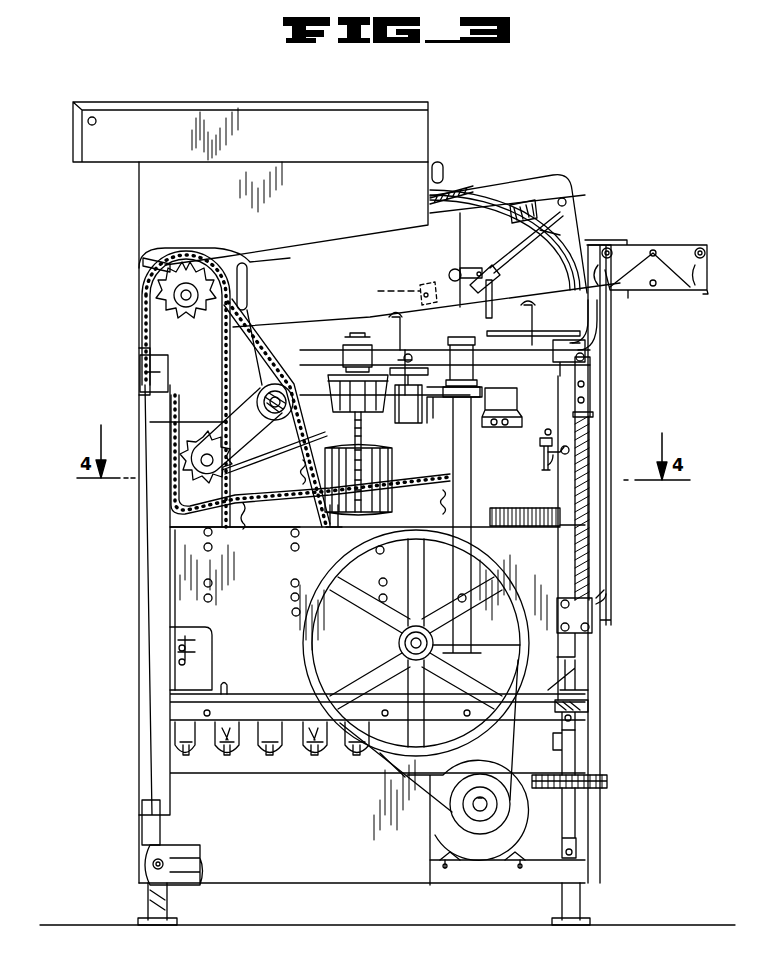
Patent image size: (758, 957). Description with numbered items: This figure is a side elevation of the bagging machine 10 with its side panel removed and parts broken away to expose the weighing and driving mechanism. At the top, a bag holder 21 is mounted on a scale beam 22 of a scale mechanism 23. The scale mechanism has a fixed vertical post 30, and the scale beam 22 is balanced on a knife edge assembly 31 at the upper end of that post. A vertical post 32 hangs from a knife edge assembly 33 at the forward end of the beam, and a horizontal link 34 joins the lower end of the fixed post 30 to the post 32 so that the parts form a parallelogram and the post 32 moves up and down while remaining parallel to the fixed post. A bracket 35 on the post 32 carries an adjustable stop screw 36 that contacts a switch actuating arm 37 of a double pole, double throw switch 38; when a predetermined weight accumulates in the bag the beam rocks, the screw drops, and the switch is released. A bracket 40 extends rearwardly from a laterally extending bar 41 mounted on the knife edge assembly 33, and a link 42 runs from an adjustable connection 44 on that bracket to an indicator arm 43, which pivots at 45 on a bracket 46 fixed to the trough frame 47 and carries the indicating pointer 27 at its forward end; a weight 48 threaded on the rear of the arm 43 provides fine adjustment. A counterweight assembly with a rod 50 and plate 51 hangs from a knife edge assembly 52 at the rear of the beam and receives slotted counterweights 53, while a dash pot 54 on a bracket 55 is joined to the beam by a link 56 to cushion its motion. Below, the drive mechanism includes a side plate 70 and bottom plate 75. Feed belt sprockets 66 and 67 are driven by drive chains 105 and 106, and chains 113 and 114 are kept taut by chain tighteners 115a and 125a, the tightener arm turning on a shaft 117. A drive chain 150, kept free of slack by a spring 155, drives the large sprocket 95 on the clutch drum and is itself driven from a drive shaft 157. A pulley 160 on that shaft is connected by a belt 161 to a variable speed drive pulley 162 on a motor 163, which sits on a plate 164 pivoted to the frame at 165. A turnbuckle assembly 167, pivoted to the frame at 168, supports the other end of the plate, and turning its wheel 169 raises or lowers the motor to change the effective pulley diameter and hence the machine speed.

The machine 10 is at (107, 595).
The bag holder 21 is at (698, 234).
The scale beam 22 is at (500, 361).
The scale mechanism 23 is at (572, 414).
The indicating pointer 27 is at (485, 315).
The fixed vertical post 30 is at (463, 472).
The knife edge assembly 31 is at (476, 370).
The vertical post 32 is at (568, 550).
The knife edge assembly 33 is at (584, 356).
The horizontal link 34 is at (540, 650).
The bracket 35 is at (563, 457).
The adjustable stop screw 36 is at (548, 462).
The switch actuating arm 37 is at (545, 436).
The double pole, double throw switch 38 is at (485, 427).
The bracket 40 is at (555, 364).
The laterally extending bar 41 is at (584, 338).
The link 42 is at (495, 298).
The indicator arm 43 is at (528, 242).
The adjustable connection 44 is at (485, 334).
The pivot point 45 is at (479, 268).
The bracket 46 is at (462, 268).
The trough frame 47 is at (354, 278).
The weight 48 is at (396, 292).
The rod 50 is at (350, 420).
The plate 51 is at (330, 525).
The knife edge assembly 52 is at (345, 355).
The slotted counterweights 53 is at (364, 476).
The dash pot 54 is at (418, 425).
The bracket 55 is at (430, 400).
The link 56 is at (410, 352).
The sprocket 66 is at (248, 300).
The sprocket 67 is at (190, 275).
The side plate 70 is at (275, 644).
The bottom plate 75 is at (190, 692).
The large sprocket 95 is at (243, 524).
The drive chain 105 is at (246, 312).
The drive chain 106 is at (188, 253).
The chain 113 is at (150, 378).
The chain 114 is at (228, 380).
The chain tightener 115a is at (300, 466).
The shaft 117 is at (288, 393).
The chain tightener 125a is at (227, 425).
The drive chain 150 is at (250, 508).
The spring 155 is at (545, 530).
The drive shaft 157 is at (405, 645).
The pulley 160 is at (292, 612).
The belt 161 is at (395, 768).
The variable speed drive pulley 162 is at (452, 808).
The motor 163 is at (448, 832).
The plate 164 is at (482, 862).
The pivotal attachment 165 is at (162, 862).
The turnbuckle assembly 167 is at (590, 813).
The pivotal connection 168 is at (572, 718).
The wheel 169 is at (597, 778).